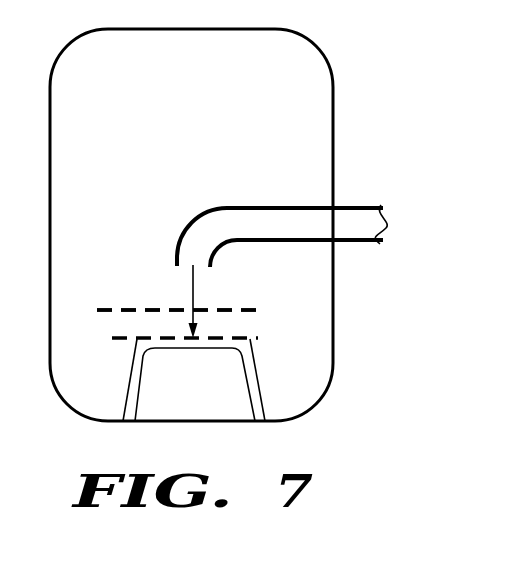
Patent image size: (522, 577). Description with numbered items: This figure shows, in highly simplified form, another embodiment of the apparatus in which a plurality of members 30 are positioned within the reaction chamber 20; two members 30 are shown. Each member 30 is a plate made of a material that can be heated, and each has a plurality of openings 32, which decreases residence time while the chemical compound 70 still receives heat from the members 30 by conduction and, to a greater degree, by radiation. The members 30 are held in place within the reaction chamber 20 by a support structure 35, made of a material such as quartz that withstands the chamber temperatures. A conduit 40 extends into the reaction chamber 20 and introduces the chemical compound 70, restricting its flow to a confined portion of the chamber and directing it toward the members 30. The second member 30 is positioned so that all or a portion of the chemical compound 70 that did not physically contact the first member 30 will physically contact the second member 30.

The reaction chamber 20 is at (318, 52).
The member 30 is at (286, 285).
The openings 32 is at (115, 302).
The support structure 35 is at (141, 366).
The conduit 40 is at (378, 246).
The chemical compound 70 is at (196, 290).